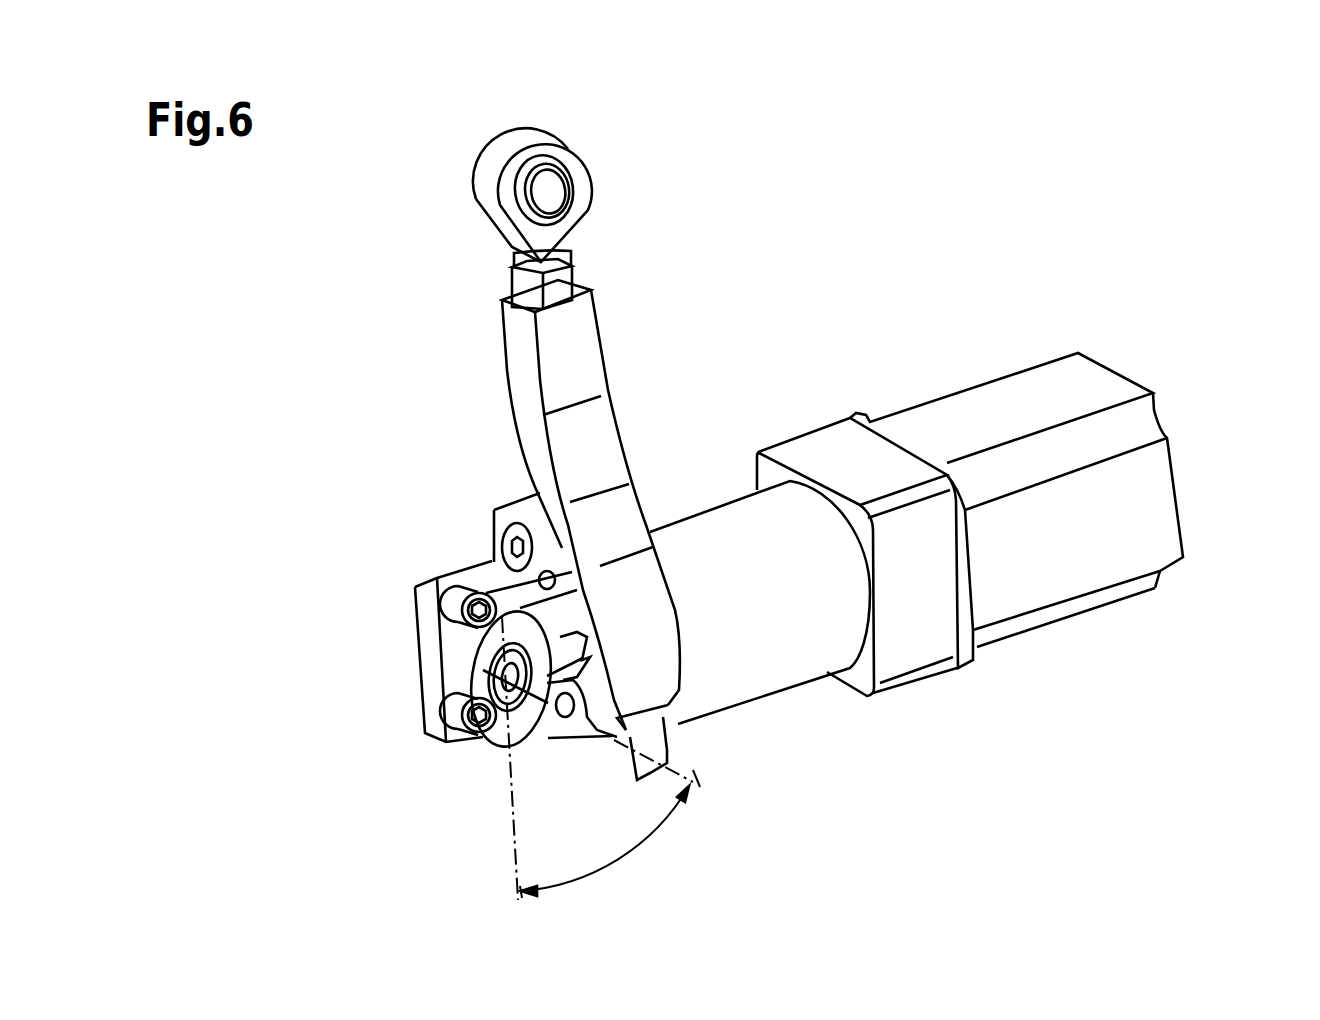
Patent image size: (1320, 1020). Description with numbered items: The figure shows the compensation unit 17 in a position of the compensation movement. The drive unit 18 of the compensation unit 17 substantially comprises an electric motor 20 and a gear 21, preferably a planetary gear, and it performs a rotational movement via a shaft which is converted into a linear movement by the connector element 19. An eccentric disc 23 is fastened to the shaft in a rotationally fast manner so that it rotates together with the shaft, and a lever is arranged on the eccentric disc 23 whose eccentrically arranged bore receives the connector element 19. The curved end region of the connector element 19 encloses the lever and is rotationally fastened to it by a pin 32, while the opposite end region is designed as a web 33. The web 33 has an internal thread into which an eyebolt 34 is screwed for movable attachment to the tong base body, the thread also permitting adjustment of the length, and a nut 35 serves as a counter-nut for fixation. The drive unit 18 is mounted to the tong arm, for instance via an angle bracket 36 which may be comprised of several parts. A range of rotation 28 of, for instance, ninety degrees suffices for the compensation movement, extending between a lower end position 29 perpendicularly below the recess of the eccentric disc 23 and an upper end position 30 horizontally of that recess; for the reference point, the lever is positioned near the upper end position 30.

The compensation unit 17 is at (1203, 240).
The drive unit 18 is at (1012, 745).
The connector element 19 is at (662, 368).
The electric motor 20 is at (1057, 534).
The gear 21 is at (700, 550).
The eccentric disc 23 is at (483, 620).
The range of rotation 28 is at (640, 847).
The lower end position 29 is at (510, 830).
The upper end position 30 is at (697, 781).
The pin 32 is at (560, 692).
The web 33 is at (527, 393).
The eyebolt 34 is at (630, 178).
The nut 35 is at (527, 290).
The angle bracket 36 is at (450, 680).